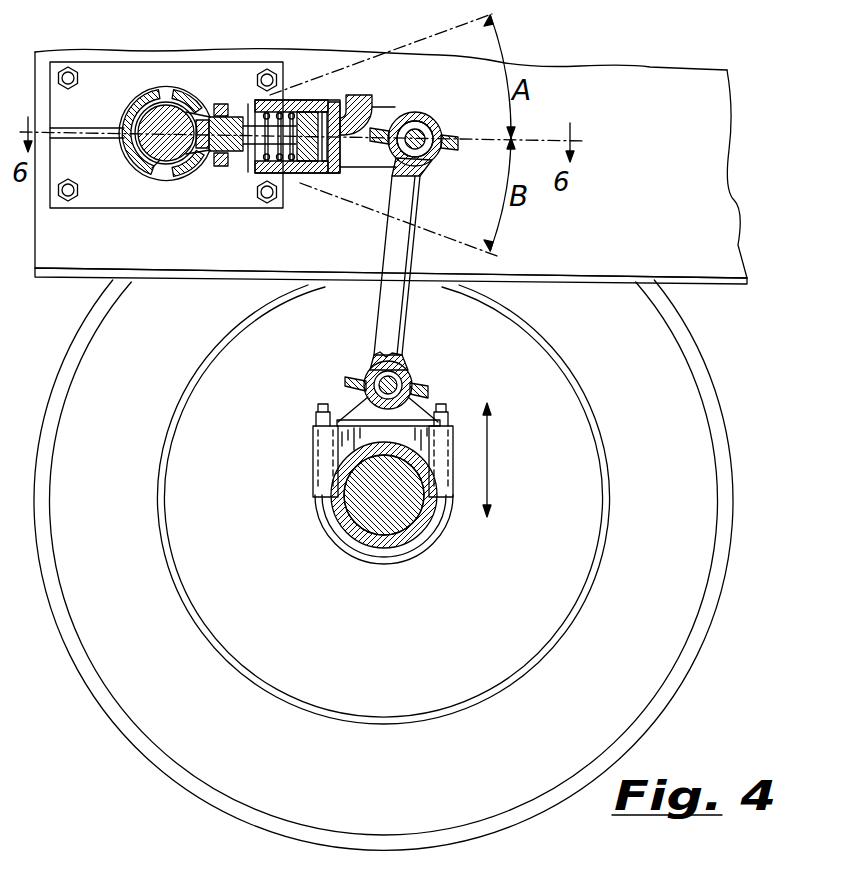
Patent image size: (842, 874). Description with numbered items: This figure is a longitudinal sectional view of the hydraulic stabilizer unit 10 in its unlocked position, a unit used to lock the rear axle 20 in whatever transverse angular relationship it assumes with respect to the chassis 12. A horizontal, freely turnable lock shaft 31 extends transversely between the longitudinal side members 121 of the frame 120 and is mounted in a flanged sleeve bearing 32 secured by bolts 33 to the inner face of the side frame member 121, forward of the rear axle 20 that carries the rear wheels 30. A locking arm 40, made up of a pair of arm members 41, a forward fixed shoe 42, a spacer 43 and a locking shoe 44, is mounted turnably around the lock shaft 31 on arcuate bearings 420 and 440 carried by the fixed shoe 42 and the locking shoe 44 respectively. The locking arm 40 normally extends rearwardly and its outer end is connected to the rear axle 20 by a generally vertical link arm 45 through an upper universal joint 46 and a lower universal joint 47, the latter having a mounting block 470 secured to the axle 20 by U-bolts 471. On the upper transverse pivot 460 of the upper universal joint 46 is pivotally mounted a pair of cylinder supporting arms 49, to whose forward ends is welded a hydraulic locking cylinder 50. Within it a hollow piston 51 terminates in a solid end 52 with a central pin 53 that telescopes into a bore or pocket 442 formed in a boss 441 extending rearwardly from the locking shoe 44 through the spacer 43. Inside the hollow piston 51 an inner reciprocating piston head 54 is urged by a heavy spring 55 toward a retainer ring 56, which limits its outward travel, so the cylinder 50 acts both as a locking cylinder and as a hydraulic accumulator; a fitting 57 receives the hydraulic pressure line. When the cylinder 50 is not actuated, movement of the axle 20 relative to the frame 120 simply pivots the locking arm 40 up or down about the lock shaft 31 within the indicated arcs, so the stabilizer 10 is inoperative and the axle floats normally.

The hydraulic stabilizer unit 10 is at (425, 113).
The chassis 12 is at (78, 276).
The rear axle 20 is at (397, 518).
The rear wheels 30 is at (510, 798).
The lock shaft 31 is at (168, 112).
The flanged sleeve bearings 32 is at (100, 198).
The bolts 33 is at (70, 72).
The locking arm 40 is at (207, 95).
The arm members 41 is at (197, 182).
The forward fixed shoe 42 is at (130, 112).
The spacer 43 is at (234, 128).
The locking shoe 44 is at (201, 173).
The link arm 45 is at (400, 308).
The upper universal joint 46 is at (430, 125).
The lower universal joint 47 is at (404, 370).
The cylinder supporting arms 49 is at (383, 118).
The hydraulic locking cylinder 50 is at (312, 178).
The hollow piston 51 is at (302, 178).
The solid end 52 is at (248, 196).
The central pin 53 is at (260, 108).
The inner reciprocating piston head 54 is at (313, 124).
The heavy spring 55 is at (292, 111).
The retainer ring 56 is at (342, 152).
The fitting 57 is at (358, 110).
The frame 120 is at (648, 68).
The longitudinal side members 121 is at (700, 112).
The arcuate bearing 420 is at (142, 156).
The arcuate bearing 440 is at (176, 163).
The boss 441 is at (222, 104).
The bore or pocket 442 is at (150, 168).
The upper transverse pivot 460 is at (419, 146).
The mounting block 470 is at (315, 478).
The U-bolts 471 is at (348, 543).